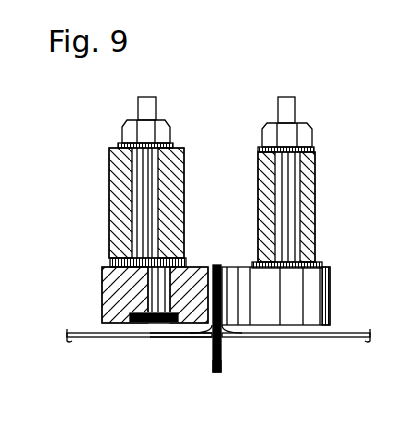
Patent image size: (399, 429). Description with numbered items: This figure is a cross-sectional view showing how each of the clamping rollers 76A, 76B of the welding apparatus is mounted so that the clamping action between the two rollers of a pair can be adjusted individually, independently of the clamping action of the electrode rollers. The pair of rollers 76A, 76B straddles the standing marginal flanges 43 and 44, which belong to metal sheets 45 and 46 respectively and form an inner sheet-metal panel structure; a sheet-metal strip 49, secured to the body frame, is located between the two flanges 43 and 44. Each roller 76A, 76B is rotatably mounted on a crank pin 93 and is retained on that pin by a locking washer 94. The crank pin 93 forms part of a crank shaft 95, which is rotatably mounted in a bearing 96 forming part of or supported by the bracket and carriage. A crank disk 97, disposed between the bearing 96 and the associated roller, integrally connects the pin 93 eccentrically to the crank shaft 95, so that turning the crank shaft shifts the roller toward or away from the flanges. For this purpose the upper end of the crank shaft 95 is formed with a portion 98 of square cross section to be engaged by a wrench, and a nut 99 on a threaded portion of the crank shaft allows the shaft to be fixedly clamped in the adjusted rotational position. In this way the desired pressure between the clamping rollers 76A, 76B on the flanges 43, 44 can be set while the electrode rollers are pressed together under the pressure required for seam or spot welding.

The square portion 98 is at (148, 110).
The nut 99 is at (168, 135).
The bearing 96 is at (173, 173).
The crank shaft 95 is at (147, 207).
The crank disk 97 is at (180, 262).
The crank pin 93 is at (152, 287).
The locking washer 94 is at (140, 340).
The clamping roller 76A is at (108, 305).
The clamping roller 76B is at (330, 290).
The metal sheet 46 is at (93, 341).
The marginal flange 44 is at (187, 341).
The metal sheet 45 is at (323, 341).
The marginal flange 43 is at (243, 340).
The sheet-metal strip 49 is at (213, 368).